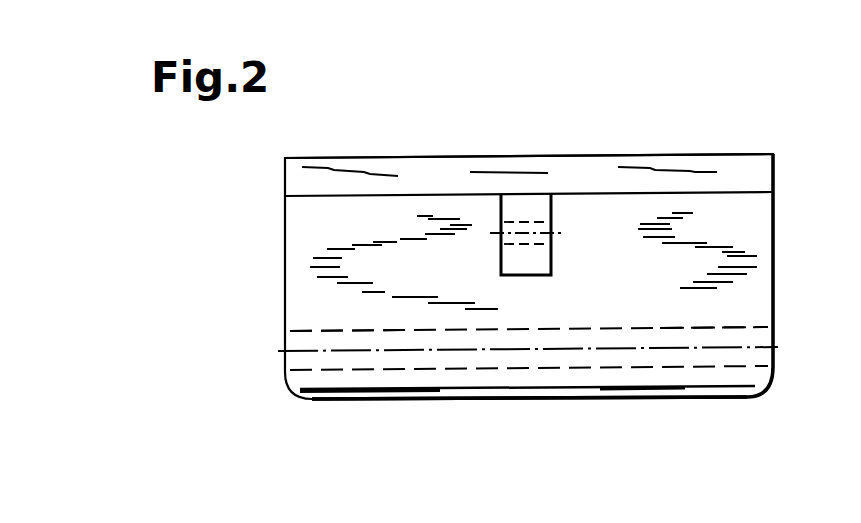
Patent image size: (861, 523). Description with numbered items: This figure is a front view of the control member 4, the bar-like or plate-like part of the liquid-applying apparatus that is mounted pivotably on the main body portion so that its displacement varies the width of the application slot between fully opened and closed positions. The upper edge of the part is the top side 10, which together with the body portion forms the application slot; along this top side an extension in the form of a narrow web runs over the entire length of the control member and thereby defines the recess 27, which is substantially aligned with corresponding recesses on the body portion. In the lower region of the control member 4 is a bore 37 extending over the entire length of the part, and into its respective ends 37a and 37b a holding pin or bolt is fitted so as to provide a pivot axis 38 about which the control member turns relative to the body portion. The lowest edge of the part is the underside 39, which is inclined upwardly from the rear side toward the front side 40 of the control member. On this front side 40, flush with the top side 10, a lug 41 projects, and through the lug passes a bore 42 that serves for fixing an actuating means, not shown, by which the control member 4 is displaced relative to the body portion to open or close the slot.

The control member 4 is at (247, 247).
The top side 10 is at (374, 158).
The recess 27 is at (503, 172).
The lug 41 is at (541, 196).
The bore 42 is at (538, 222).
The front side 40 is at (632, 291).
The bore 37 is at (607, 364).
The end of bore 37a is at (290, 332).
The end of bore 37b is at (760, 332).
The pivot axis 38 is at (290, 352).
The underside 39 is at (437, 400).